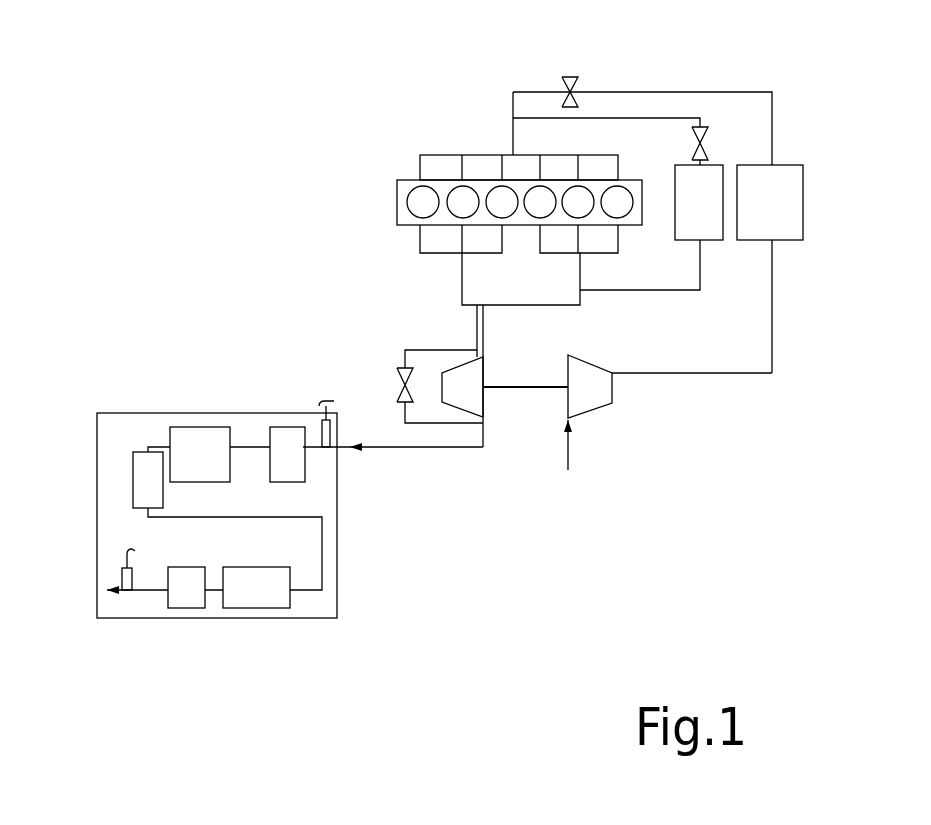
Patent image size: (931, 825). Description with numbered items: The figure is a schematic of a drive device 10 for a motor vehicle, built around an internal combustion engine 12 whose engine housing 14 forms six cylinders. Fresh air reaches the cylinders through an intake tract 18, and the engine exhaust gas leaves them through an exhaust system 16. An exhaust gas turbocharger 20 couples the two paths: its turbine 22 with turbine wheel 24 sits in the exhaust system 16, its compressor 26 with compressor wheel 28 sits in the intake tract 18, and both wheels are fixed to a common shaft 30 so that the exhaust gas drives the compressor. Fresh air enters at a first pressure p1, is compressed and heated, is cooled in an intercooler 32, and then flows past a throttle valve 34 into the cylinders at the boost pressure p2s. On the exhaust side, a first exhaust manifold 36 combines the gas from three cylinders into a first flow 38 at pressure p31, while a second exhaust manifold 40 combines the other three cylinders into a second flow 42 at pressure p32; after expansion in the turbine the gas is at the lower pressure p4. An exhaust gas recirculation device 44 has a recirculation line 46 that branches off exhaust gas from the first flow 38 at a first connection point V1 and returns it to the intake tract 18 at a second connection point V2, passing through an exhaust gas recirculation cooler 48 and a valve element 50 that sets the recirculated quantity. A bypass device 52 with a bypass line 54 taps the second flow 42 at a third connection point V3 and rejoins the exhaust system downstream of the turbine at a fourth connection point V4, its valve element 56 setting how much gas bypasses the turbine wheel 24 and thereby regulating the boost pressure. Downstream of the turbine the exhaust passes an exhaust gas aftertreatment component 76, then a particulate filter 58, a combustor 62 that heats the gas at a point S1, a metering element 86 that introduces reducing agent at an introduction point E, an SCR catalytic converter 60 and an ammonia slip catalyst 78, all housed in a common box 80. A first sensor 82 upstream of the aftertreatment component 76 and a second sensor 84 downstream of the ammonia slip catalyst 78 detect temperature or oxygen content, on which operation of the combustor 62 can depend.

The drive device 10 is at (147, 253).
The internal combustion engine 12 is at (395, 226).
The engine housing 14 is at (472, 139).
The exhaust system 16 is at (393, 493).
The intake tract 18 is at (637, 423).
The exhaust gas turbocharger 20 is at (596, 403).
The turbine 22 is at (489, 362).
The turbine wheel 24 is at (463, 408).
The compressor 26 is at (602, 357).
The compressor wheel 28 is at (576, 461).
The shaft 30 is at (555, 388).
The intercooler 32 is at (803, 207).
The throttle valve 34 is at (574, 83).
The first exhaust manifold 36 is at (624, 237).
The first flow 38 is at (535, 305).
The second exhaust manifold 40 is at (415, 256).
The second flow 42 is at (499, 279).
The exhaust gas recirculation device 44 is at (737, 307).
The recirculation line 46 is at (680, 291).
The exhaust gas recirculation cooler 48 is at (717, 165).
The valve element 50 is at (700, 126).
The bypass device 52 is at (375, 350).
The bypass line 54 is at (430, 348).
The valve element 56 is at (398, 378).
The particulate filter 58 is at (190, 427).
The SCR catalytic converter 60 is at (270, 608).
The combustor 62 is at (135, 473).
The exhaust gas aftertreatment component 76 is at (293, 487).
The ammonia slip catalyst 78 is at (187, 608).
The common box 80 is at (235, 531).
The first sensor 82 is at (322, 425).
The second sensor 84 is at (118, 583).
The metering element 86 is at (135, 515).
The first connection point V1 is at (584, 278).
The second connection point V2 is at (498, 113).
The third connection point V3 is at (467, 340).
The fourth connection point V4 is at (487, 426).
The point S1 is at (158, 521).
The introduction point E is at (150, 520).
The first pressure p1 is at (552, 446).
The second pressure p2s is at (484, 139).
The third pressure p31 is at (557, 289).
The pressure p32 is at (438, 289).
The fourth pressure p4 is at (459, 433).